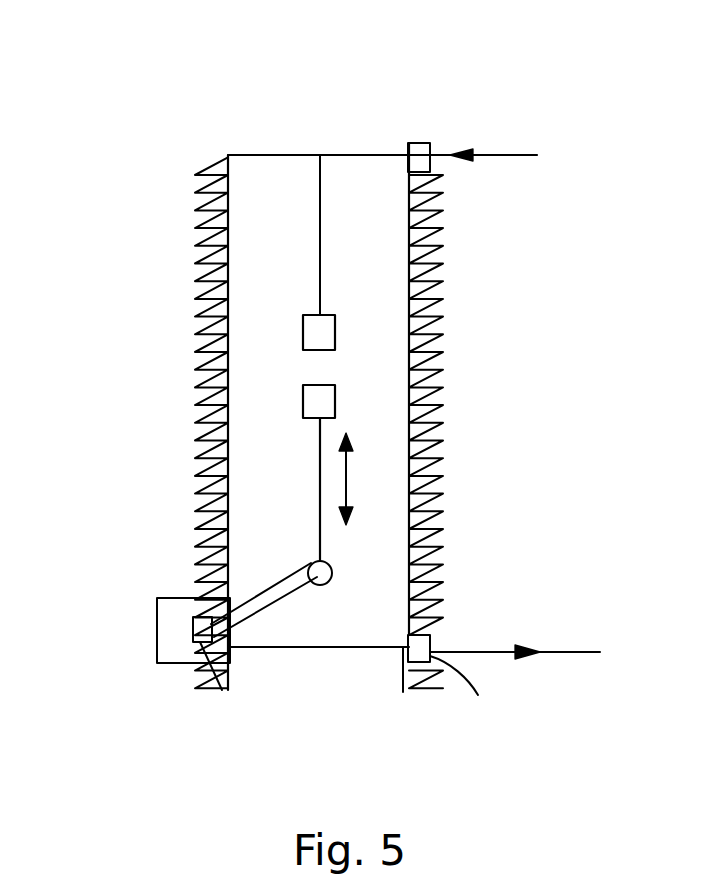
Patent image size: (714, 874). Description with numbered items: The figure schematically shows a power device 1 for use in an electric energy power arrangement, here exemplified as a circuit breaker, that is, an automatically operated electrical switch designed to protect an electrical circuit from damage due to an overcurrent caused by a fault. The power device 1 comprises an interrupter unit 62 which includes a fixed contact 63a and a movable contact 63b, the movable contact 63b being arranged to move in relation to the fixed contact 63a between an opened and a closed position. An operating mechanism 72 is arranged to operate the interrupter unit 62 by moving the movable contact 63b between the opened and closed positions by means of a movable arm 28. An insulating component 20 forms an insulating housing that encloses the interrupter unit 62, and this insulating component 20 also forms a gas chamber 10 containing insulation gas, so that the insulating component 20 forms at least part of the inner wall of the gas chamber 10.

The power device 1 is at (140, 120).
The gas chamber 10 is at (265, 190).
The insulating component 20 is at (440, 262).
The interrupter unit 62 is at (410, 351).
The fixed contact 63a is at (315, 338).
The movable contact 63b is at (315, 405).
The movable arm 28 is at (265, 595).
The operating mechanism 72 is at (173, 637).